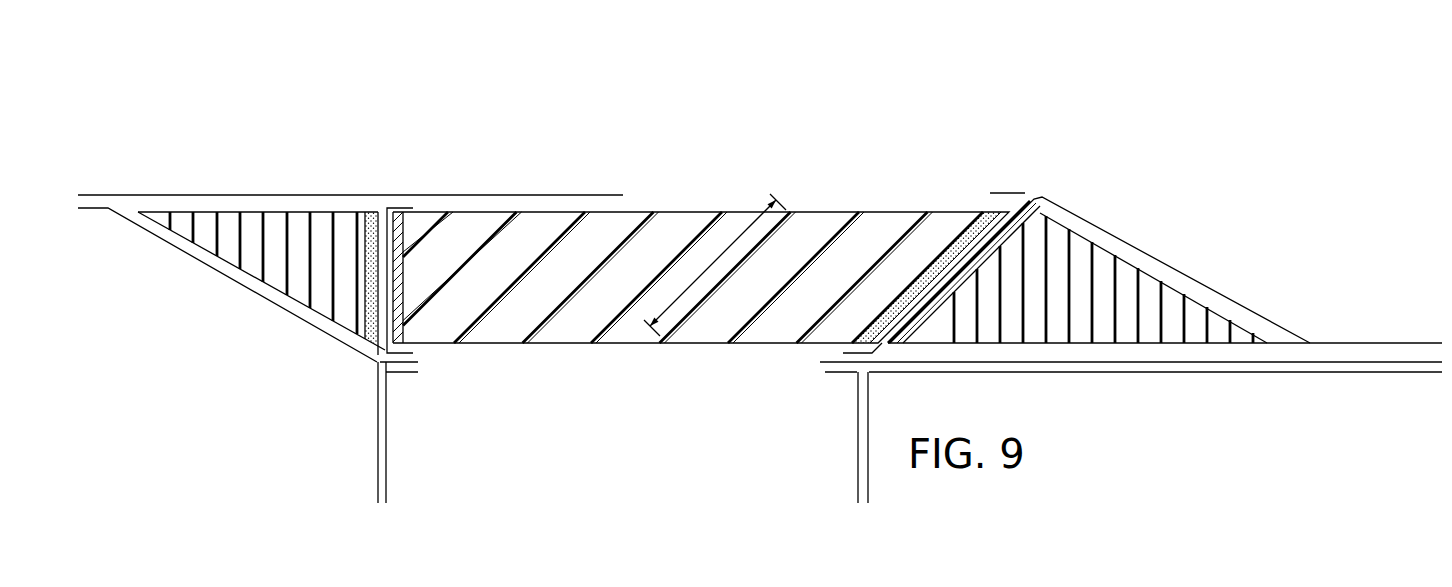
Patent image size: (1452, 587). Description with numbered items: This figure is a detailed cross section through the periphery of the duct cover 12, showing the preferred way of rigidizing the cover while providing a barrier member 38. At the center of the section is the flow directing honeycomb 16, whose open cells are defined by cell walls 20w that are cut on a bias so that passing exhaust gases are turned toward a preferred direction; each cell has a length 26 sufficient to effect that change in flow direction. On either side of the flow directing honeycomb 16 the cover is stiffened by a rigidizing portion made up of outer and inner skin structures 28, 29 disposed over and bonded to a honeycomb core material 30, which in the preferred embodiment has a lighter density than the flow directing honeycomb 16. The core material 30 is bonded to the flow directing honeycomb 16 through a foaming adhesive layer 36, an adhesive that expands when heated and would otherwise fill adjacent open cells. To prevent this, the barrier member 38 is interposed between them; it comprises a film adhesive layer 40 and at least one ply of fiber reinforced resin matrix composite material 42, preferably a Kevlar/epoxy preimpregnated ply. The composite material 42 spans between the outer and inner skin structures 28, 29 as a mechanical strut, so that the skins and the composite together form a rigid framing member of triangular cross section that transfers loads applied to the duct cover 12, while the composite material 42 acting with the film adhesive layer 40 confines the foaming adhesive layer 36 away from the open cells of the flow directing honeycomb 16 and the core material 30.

The duct cover 12 is at (847, 118).
The flow directing honeycomb 16 is at (670, 206).
The cell walls 20w is at (588, 290).
The cell length 26 is at (742, 230).
The outer skin structure 28 is at (243, 195).
The inner skin structure 29 is at (245, 283).
The core material 30 is at (293, 220).
The foaming adhesive layer 36 is at (362, 217).
The barrier member 38 is at (410, 206).
The film adhesive layer 40 is at (405, 298).
The fiber reinforced resin matrix composite material 42 is at (380, 358).